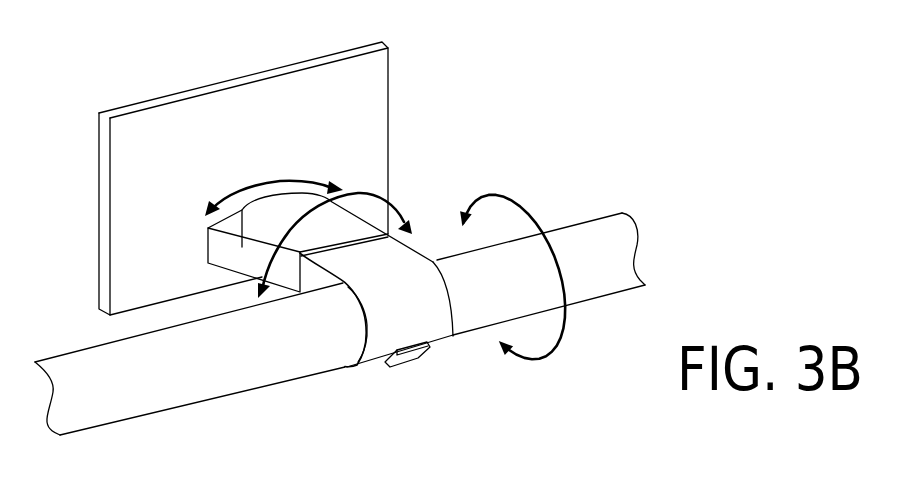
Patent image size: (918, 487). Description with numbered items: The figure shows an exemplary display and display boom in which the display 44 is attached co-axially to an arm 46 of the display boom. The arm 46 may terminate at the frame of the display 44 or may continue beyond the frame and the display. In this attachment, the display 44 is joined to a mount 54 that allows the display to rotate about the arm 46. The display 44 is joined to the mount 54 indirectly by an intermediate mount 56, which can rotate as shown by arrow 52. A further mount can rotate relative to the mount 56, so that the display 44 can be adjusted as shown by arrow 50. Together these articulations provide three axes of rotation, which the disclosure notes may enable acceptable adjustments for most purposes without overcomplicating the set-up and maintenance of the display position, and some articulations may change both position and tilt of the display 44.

The display 44 is at (165, 96).
The arm 46 is at (250, 352).
The arrow 50 is at (258, 182).
The arrow 52 is at (365, 195).
The mount 54 is at (410, 308).
The mount 56 is at (272, 215).